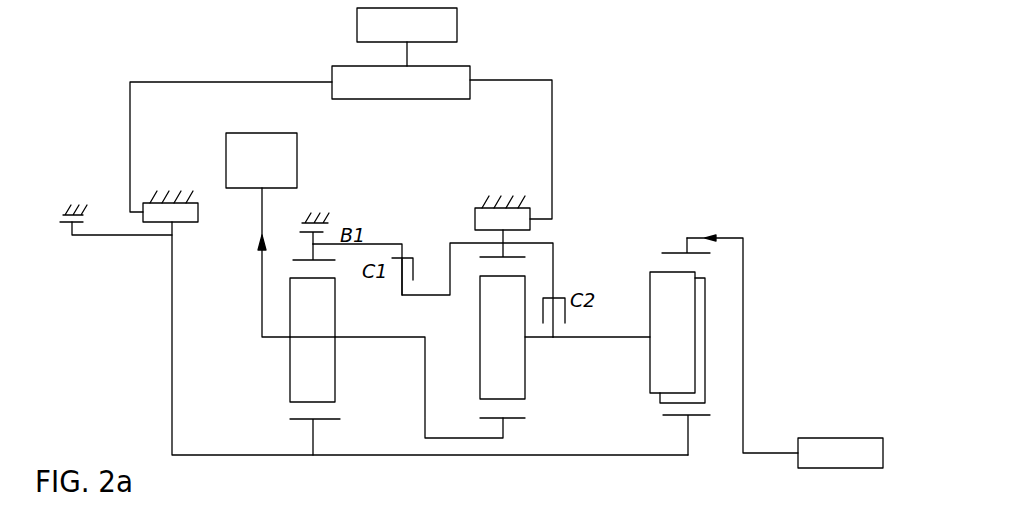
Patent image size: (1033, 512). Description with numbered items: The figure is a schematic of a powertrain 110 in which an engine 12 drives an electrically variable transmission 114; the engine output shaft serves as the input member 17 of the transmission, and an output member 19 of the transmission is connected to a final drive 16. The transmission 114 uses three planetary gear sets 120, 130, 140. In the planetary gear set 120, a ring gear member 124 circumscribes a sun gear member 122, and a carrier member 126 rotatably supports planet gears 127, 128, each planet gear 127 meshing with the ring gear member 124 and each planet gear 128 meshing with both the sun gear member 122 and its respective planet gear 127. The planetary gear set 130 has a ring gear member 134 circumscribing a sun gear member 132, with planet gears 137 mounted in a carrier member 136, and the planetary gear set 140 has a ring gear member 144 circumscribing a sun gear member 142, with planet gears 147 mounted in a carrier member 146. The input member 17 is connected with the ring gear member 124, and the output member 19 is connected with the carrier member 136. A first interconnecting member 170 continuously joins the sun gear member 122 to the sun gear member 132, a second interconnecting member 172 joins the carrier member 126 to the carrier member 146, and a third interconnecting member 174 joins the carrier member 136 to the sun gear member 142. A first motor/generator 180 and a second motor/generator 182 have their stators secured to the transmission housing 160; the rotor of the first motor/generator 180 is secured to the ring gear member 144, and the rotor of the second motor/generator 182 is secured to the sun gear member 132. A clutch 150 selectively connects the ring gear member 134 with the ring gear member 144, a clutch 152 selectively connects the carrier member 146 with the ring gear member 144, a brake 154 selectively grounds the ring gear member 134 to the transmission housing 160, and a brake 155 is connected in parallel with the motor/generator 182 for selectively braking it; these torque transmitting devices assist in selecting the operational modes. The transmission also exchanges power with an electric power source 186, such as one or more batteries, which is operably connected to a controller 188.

The powertrain 110 is at (90, 50).
The electrically variable transmission 114 is at (88, 103).
The electric power source 186 is at (457, 22).
The controller 188 is at (470, 78).
The final drive 16 is at (278, 133).
The transmission housing 160 is at (68, 205).
The brake 155 is at (55, 224).
The second motor/generator 182 is at (201, 218).
The first motor/generator 180 is at (472, 218).
The output member 19 is at (260, 207).
The brake 154 is at (330, 222).
The ring gear member 134 is at (292, 259).
The planet gears 137 is at (312, 340).
The carrier member 136 is at (286, 344).
The clutch 150 is at (394, 289).
The third interconnecting member 174 is at (413, 333).
The ring gear member 144 is at (486, 259).
The planet gears 147 is at (502, 337).
The carrier member 146 is at (527, 341).
The clutch 152 is at (566, 325).
The second interconnecting member 172 is at (623, 333).
The planet gear 127 is at (672, 332).
The planet gear 128 is at (705, 345).
The carrier member 126 is at (647, 344).
The ring gear member 124 is at (667, 252).
The first interconnecting member 170 is at (573, 453).
The planetary gear set 130 is at (310, 426).
The sun gear member 132 is at (333, 420).
The planetary gear set 140 is at (500, 425).
The sun gear member 142 is at (513, 420).
The planetary gear set 120 is at (687, 425).
The sun gear member 122 is at (703, 418).
The engine 12 is at (820, 438).
The input member 17 is at (773, 453).